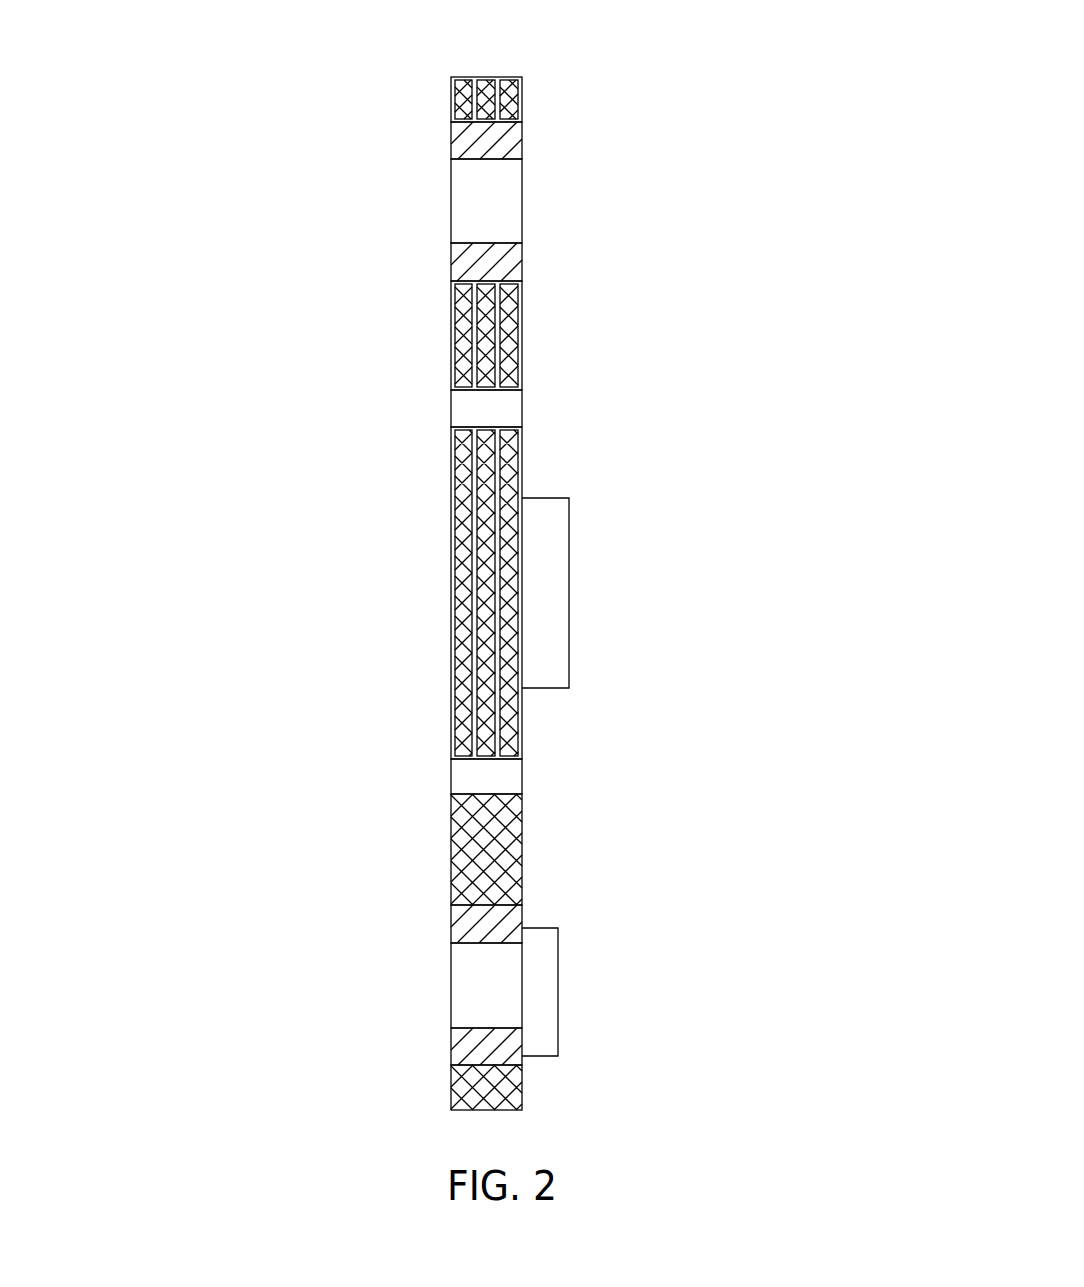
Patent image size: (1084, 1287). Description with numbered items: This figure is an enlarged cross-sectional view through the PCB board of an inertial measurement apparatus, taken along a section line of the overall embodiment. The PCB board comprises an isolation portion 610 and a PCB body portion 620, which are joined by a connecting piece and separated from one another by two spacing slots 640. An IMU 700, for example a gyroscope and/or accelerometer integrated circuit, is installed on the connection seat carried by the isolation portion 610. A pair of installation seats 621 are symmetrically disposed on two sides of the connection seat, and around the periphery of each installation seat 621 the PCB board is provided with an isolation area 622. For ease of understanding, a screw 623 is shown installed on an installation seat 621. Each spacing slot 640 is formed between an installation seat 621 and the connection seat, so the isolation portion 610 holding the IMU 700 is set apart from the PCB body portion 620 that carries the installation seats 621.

The isolation portion 610 is at (458, 553).
The PCB body portion 620 is at (462, 305).
The installation seat 621 is at (497, 200).
The isolation area 622 is at (460, 140).
The screw 623 is at (540, 983).
The spacing slot 640 is at (497, 409).
The IMU 700 is at (552, 580).